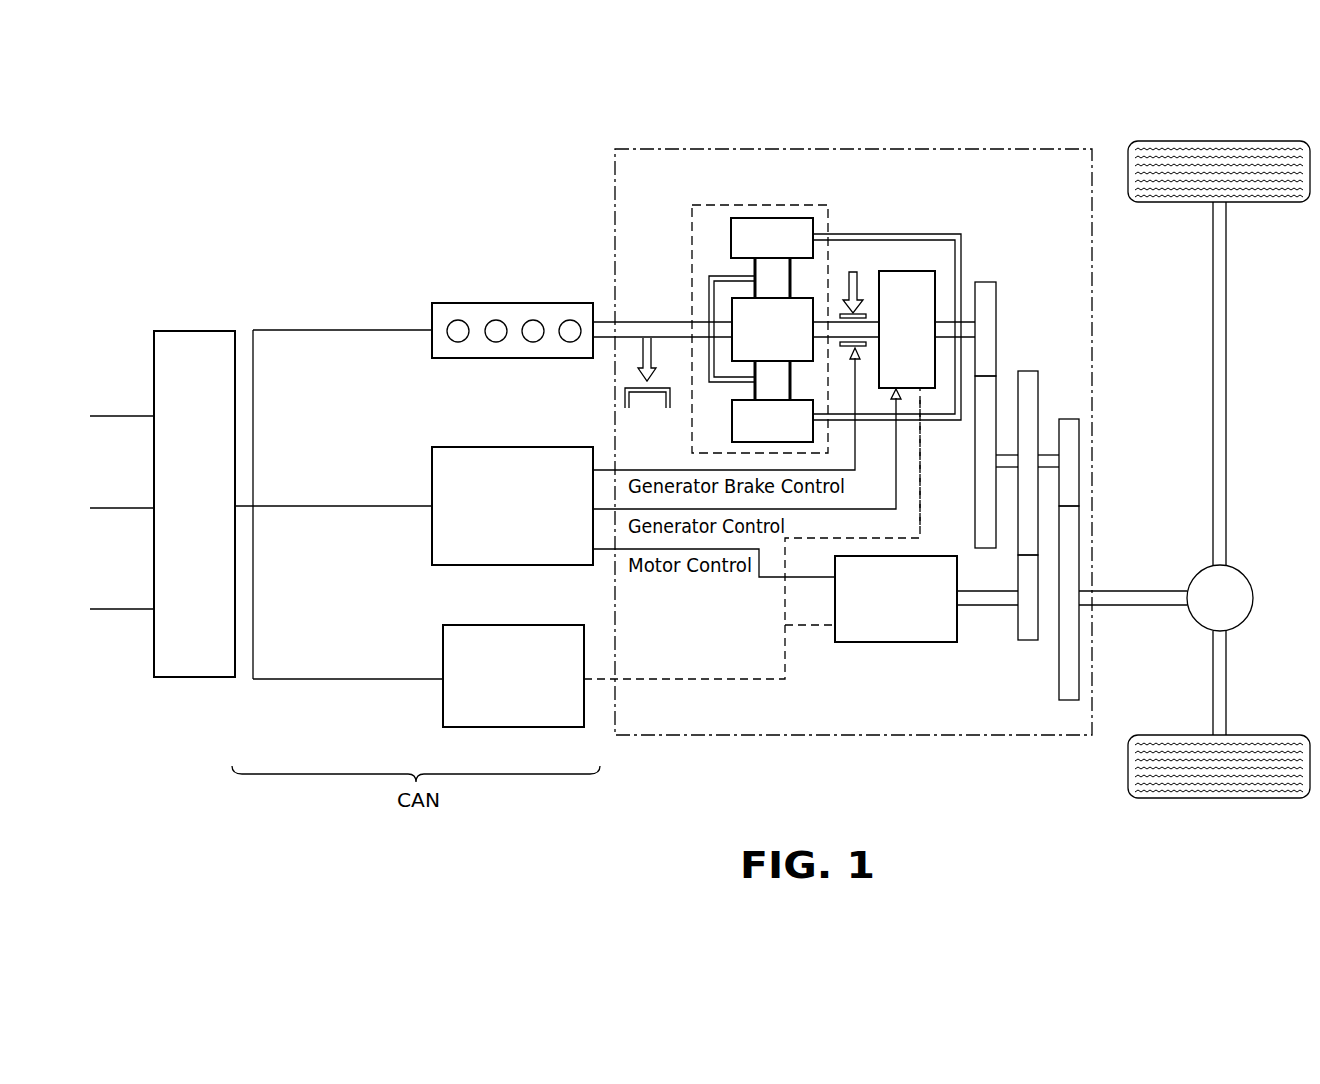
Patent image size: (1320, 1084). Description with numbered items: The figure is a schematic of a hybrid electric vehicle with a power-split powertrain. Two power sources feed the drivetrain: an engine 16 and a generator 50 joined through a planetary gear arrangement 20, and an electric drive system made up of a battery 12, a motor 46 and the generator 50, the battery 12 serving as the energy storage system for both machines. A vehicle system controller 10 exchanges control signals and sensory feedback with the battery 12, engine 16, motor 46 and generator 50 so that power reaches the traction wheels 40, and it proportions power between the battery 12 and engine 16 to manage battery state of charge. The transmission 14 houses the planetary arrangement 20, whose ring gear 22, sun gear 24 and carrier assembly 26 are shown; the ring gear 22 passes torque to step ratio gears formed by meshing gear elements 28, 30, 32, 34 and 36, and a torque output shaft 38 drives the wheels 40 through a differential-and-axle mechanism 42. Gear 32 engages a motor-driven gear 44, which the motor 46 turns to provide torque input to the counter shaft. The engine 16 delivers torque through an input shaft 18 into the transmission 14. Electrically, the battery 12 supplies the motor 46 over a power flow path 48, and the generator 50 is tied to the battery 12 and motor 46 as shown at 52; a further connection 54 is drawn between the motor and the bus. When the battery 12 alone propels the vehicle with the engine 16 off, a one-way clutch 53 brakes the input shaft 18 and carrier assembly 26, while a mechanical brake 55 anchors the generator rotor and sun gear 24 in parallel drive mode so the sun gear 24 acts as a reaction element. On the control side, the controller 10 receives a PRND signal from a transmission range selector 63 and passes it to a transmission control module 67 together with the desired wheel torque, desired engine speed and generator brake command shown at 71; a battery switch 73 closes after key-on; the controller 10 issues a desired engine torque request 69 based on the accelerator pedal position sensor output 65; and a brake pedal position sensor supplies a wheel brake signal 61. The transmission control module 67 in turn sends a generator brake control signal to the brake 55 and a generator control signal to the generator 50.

The vehicle system controller 10 is at (195, 331).
The battery 12 is at (508, 625).
The transmission 14 is at (780, 737).
The engine 16 is at (475, 303).
The input shaft 18 is at (603, 320).
The planetary gear arrangement 20 is at (838, 213).
The ring gear 22 is at (731, 226).
The sun gear 24 is at (709, 308).
The carrier assembly 26 is at (716, 277).
The gear element 28 is at (996, 312).
The gear element 30 is at (975, 495).
The gear element 32 is at (1038, 395).
The gear element 34 is at (1079, 445).
The gear element 36 is at (1079, 552).
The torque output shaft 38 is at (1115, 590).
The vehicle traction wheels 40 is at (1236, 205).
The differential-and-axle mechanism 42 is at (1253, 603).
The motor-driven gear 44 is at (1028, 640).
The electric machine (motor) 46 is at (868, 645).
The power flow path 48 is at (601, 678).
The electric machine (generator) 50 is at (915, 271).
The electrical connection 52 is at (920, 487).
The one-way clutch 53 is at (645, 350).
The motor electrical connection 54 is at (810, 625).
The mechanical brake 55 is at (858, 286).
The wheel brake signal 61 is at (143, 610).
The transmission range selector 63 is at (143, 417).
The accelerator pedal position sensor output 65 is at (143, 509).
The transmission control module 67 is at (540, 447).
The desired engine torque request 69 is at (385, 332).
The TCM command signals 71 is at (385, 508).
The battery switch 73 is at (385, 681).